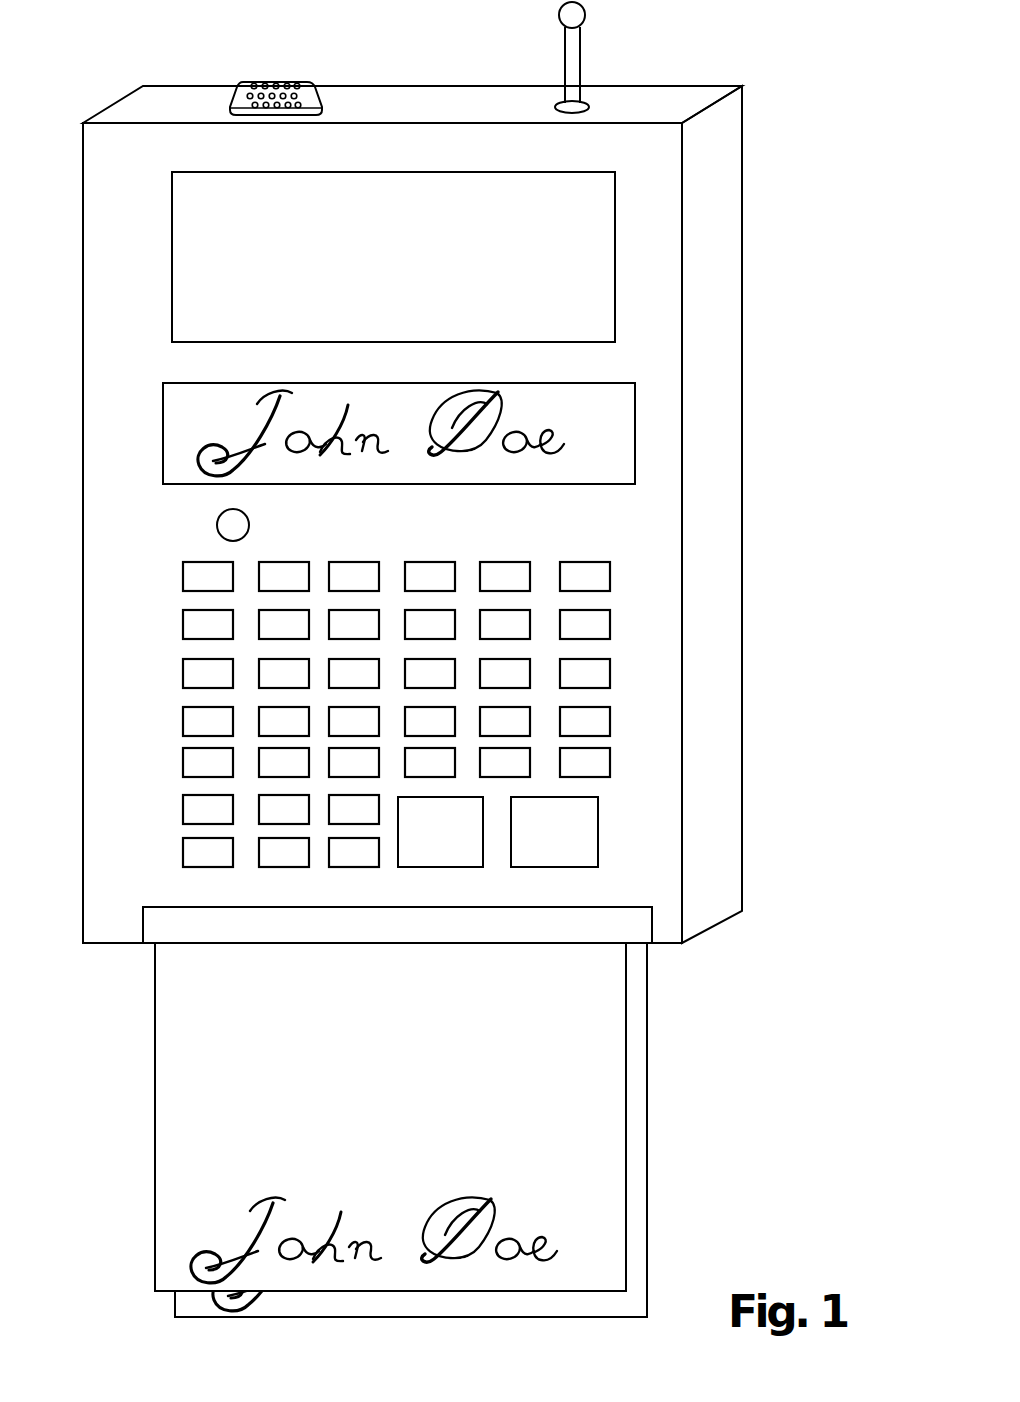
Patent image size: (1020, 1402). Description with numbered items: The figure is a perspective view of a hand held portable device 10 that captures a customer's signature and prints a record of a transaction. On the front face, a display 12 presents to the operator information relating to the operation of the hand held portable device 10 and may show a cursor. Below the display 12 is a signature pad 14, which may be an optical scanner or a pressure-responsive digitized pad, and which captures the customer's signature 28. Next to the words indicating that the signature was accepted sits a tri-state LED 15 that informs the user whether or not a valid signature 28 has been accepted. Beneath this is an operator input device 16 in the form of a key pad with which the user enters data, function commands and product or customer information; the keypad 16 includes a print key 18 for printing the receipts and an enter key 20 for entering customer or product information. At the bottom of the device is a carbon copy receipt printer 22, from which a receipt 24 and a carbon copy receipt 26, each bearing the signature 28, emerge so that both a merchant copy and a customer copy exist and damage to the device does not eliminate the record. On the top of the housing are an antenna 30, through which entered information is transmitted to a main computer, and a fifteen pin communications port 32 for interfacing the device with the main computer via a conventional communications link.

The hand held portable device 10 is at (700, 31).
The display 12 is at (578, 180).
The signature pad 14 is at (578, 395).
The tri-state LED 15 is at (228, 519).
The operator input device 16 is at (598, 545).
The print key 18 is at (432, 852).
The enter key 20 is at (575, 842).
The carbon copy receipt printer 22 is at (456, 1112).
The receipt 24 is at (608, 1121).
The carbon copy receipt 26 is at (632, 1200).
The signature 28 is at (215, 418).
The antenna 30 is at (577, 52).
The fifteen pin communications port 32 is at (277, 82).